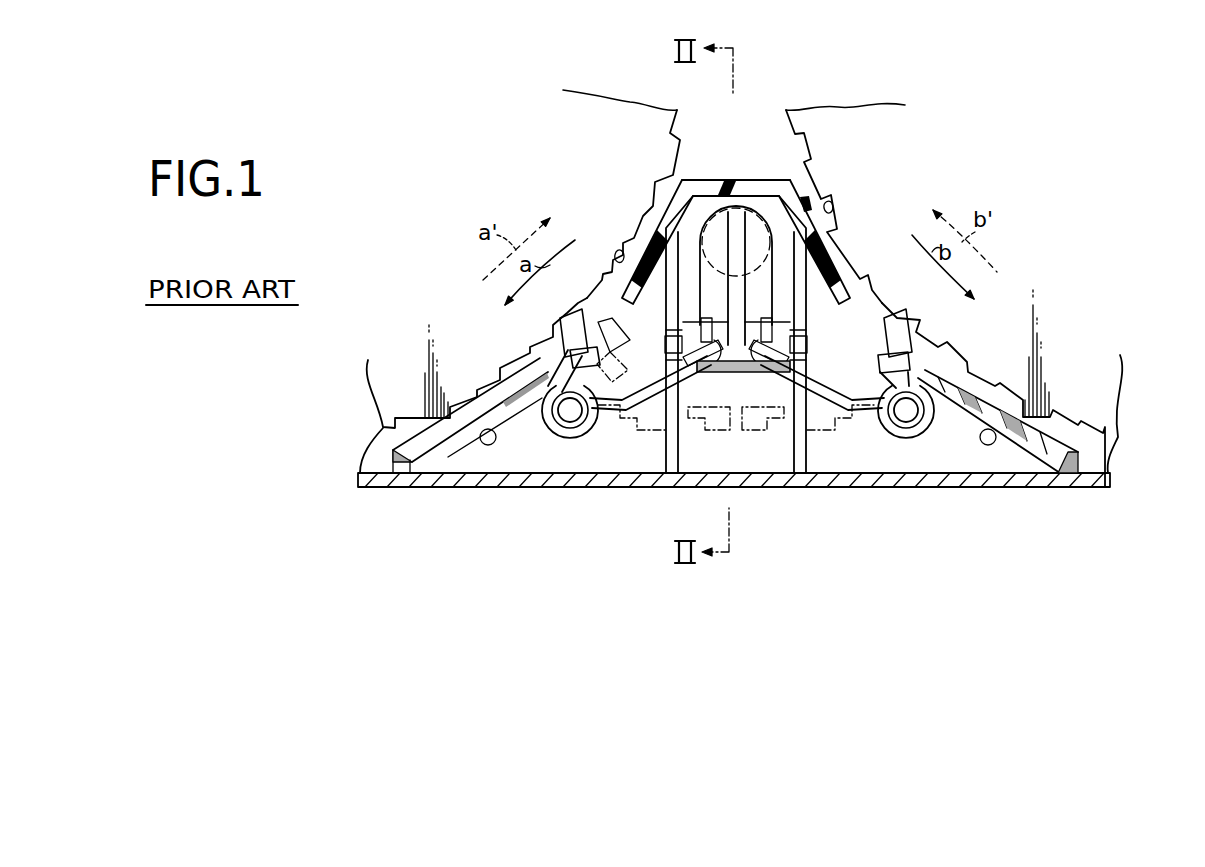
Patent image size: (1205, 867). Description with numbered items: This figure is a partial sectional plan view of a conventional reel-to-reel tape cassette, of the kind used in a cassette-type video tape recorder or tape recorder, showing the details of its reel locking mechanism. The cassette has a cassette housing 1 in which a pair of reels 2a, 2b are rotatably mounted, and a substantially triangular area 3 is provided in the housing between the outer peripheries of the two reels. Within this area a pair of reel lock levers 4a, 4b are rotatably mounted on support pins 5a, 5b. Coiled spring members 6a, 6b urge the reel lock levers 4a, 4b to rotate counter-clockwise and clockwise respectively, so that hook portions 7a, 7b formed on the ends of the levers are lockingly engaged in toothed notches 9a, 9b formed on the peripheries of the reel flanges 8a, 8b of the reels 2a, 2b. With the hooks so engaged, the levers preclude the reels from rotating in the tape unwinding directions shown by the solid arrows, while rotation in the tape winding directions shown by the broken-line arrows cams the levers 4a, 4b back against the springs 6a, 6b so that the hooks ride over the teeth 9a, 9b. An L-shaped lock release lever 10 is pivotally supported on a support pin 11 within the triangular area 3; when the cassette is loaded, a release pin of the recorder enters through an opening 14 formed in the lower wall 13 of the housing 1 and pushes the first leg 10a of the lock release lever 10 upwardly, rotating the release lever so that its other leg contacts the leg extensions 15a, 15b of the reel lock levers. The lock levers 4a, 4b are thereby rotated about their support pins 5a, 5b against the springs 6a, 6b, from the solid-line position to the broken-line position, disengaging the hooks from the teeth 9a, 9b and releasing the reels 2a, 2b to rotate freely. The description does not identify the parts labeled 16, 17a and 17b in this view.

The cassette housing 1 is at (490, 487).
The reel 2a is at (395, 375).
The reel 2b is at (1098, 393).
The substantially triangular area 3 is at (753, 432).
The reel lock lever 4a is at (580, 350).
The reel lock lever 4b is at (903, 352).
The support pin 5a is at (570, 410).
The support pin 5b is at (906, 410).
The coiled spring member 6a is at (528, 432).
The coiled spring member 6b is at (952, 423).
The hook portion 7a is at (578, 318).
The hook portion 7b is at (900, 310).
The reel flange 8a is at (610, 120).
The reel flange 8b is at (827, 127).
The toothed notches 9a is at (618, 252).
The toothed notches 9b is at (833, 205).
The lock release lever 10 is at (755, 222).
The first leg 10a is at (722, 215).
The support pin 11 is at (670, 344).
The lower wall 13 is at (453, 457).
The opening 14 is at (757, 263).
The leg extension 15a is at (675, 397).
The leg extension 15b is at (800, 392).
The inclined guide 16 is at (705, 270).
The right pawl 17a is at (768, 366).
The left pawl 17b is at (714, 366).